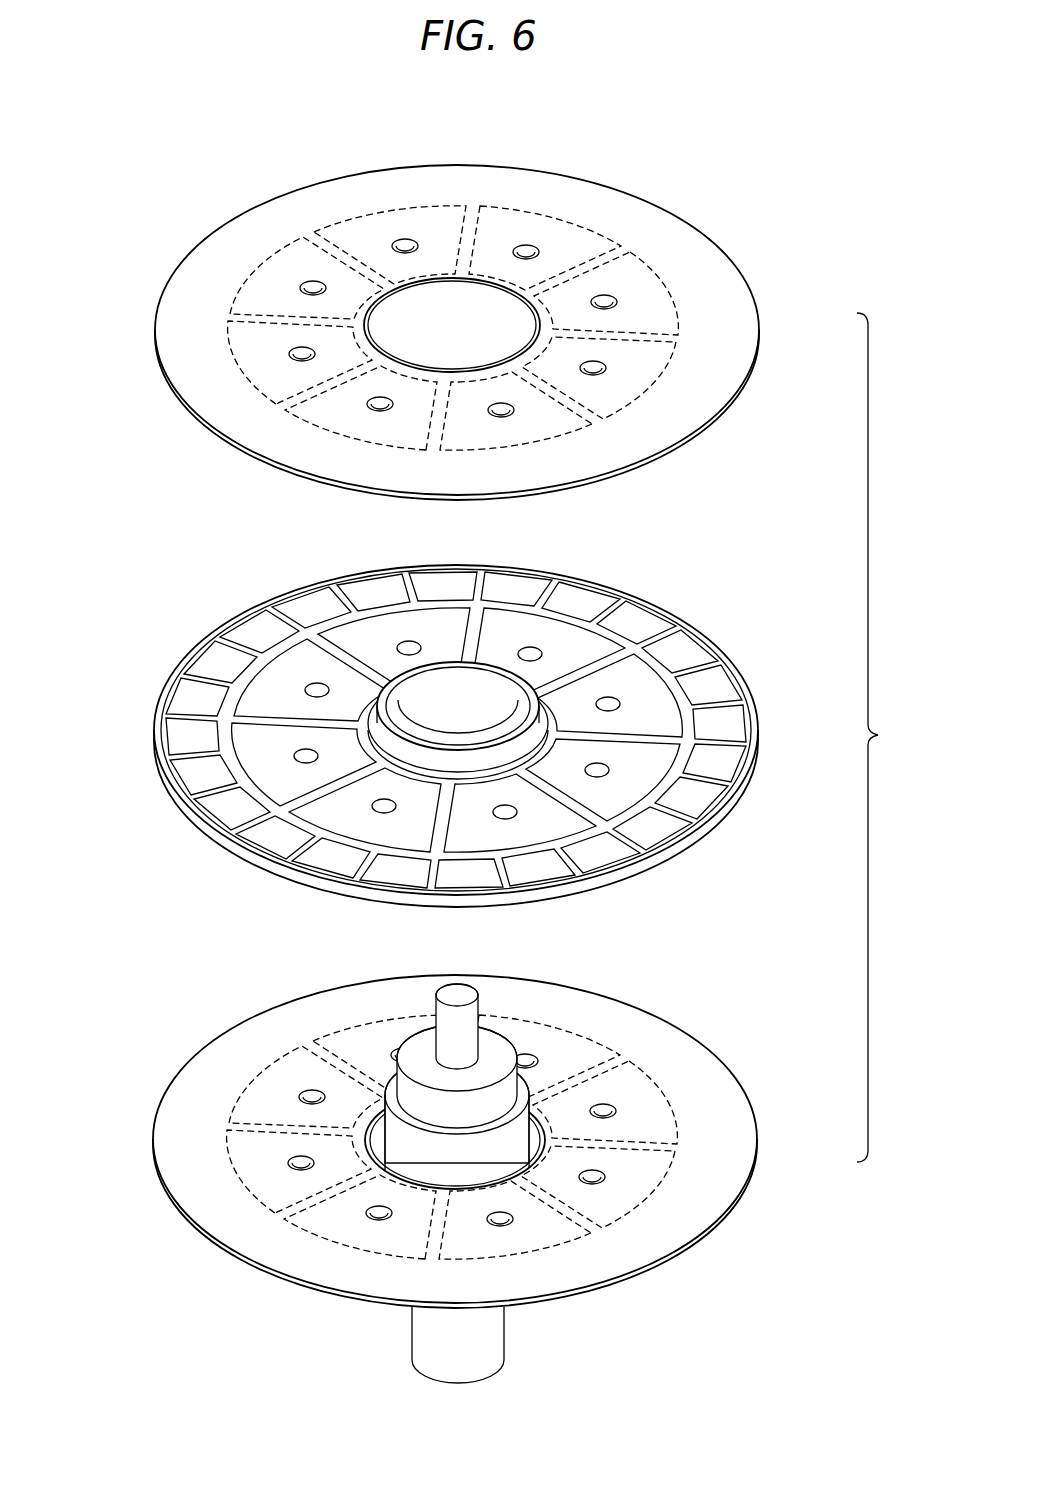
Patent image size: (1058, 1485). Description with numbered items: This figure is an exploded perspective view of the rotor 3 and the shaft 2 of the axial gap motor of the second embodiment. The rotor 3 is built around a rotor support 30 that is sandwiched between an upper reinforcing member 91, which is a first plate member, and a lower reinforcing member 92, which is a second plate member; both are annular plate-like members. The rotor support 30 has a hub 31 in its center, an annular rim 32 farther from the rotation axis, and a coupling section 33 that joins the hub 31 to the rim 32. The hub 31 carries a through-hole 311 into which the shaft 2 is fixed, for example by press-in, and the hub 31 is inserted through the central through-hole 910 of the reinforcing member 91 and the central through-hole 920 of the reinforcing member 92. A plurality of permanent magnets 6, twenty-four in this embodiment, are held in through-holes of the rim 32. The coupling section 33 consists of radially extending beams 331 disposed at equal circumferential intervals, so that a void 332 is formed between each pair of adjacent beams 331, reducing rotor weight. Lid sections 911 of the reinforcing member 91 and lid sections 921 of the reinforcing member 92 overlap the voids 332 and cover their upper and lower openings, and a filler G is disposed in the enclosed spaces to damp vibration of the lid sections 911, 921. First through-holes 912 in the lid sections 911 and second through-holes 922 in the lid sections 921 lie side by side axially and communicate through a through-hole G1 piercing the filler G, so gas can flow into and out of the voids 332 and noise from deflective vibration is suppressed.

The shaft 2 is at (488, 1342).
The rotor 3 is at (878, 737).
The permanent magnets 6 is at (720, 760).
The rotor support 30 is at (479, 737).
The hub 31 is at (258, 666).
The through-hole 311 is at (422, 692).
The rim 32 is at (648, 630).
The coupling section 33 is at (580, 665).
The beams 331 is at (652, 727).
The void 332 is at (665, 782).
The filler G is at (318, 830).
The through-hole G1 is at (520, 822).
The reinforcing member 91 is at (457, 292).
The through-hole 910 is at (373, 348).
The lid section 911 is at (553, 220).
The first through-hole 912 is at (530, 240).
The reinforcing member 92 is at (467, 1154).
The through-hole 920 is at (378, 1140).
The lid section 921 is at (372, 1234).
The second through-hole 922 is at (616, 1106).